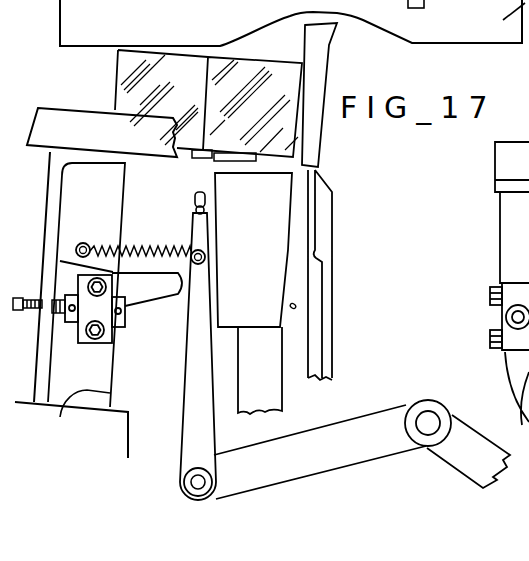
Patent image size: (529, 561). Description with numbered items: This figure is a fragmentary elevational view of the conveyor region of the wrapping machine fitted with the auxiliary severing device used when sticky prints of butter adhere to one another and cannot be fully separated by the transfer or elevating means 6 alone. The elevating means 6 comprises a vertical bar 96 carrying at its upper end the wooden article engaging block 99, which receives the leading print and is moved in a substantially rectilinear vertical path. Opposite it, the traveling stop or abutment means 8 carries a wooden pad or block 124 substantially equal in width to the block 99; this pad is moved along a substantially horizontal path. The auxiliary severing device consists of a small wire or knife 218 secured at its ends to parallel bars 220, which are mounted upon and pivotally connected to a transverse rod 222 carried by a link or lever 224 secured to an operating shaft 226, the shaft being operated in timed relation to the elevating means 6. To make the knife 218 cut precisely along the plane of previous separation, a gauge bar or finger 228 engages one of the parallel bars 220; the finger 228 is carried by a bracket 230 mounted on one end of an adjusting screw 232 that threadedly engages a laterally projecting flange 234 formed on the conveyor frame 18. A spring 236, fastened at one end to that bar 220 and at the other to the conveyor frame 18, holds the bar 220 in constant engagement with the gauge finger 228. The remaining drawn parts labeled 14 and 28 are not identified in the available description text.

The glass panels 14 is at (287, 73).
The pad or block 124 is at (312, 125).
The traveling stop or abutment means 8 is at (340, 245).
The article engaging block 99 is at (263, 267).
The transfer or elevating means 6 is at (295, 308).
The bar 96 is at (270, 383).
The bracket plate 28 is at (55, 135).
The conveyor frame 18 is at (113, 395).
The bracket 230 is at (112, 360).
The laterally projecting flange 234 is at (40, 392).
The adjusting screw 232 is at (23, 297).
The gauge bar or finger 228 is at (147, 290).
The spring 236 is at (133, 248).
The wire or knife 218 is at (195, 197).
The parallel bars 220 is at (190, 422).
The transverse rod 222 is at (192, 483).
The link or lever 224 is at (297, 463).
The operating shaft 226 is at (428, 430).